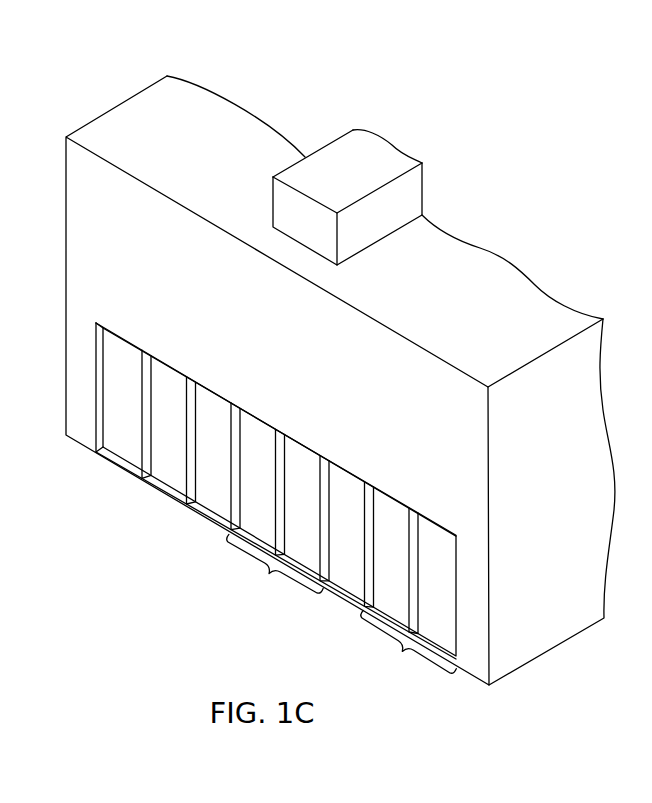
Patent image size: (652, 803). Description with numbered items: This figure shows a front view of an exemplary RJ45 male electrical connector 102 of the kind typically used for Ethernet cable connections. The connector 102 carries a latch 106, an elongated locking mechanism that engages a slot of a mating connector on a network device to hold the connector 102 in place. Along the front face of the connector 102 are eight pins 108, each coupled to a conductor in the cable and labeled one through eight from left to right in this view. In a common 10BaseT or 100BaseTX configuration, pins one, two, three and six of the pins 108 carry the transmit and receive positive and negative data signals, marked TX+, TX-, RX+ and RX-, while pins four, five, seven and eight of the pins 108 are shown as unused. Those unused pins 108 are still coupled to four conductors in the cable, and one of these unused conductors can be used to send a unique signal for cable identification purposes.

The electrical connector 102 is at (502, 190).
The latch 106 is at (340, 153).
The pins 108 is at (466, 516).